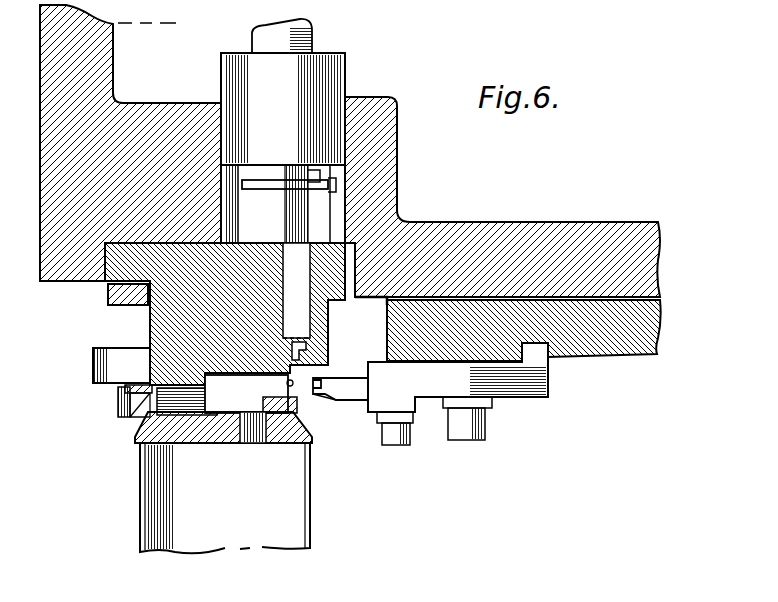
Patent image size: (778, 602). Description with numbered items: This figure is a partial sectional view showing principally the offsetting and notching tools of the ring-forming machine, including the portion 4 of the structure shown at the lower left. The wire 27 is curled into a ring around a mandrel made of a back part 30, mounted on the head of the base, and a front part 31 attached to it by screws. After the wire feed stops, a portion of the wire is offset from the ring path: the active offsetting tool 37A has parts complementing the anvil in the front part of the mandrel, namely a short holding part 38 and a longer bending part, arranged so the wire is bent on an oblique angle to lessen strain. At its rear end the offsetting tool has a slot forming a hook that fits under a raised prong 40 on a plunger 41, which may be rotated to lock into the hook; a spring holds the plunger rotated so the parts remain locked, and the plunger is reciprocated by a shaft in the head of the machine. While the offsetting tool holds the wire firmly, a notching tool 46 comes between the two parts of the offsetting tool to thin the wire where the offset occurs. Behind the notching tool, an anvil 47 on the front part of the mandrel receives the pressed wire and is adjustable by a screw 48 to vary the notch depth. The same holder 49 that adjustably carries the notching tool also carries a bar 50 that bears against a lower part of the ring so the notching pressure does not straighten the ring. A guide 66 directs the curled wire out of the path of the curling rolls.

The cylinder 4 is at (143, 533).
The wire 27 is at (130, 417).
The back part of mandrel 30 is at (225, 314).
The front part of mandrel 31 is at (184, 432).
The offsetting tool 37A is at (298, 221).
The short holding part 38 is at (292, 345).
The raised prong 40 is at (264, 188).
The plunger 41 is at (283, 92).
The notching tool 46 is at (326, 382).
The anvil 47 is at (246, 394).
The screw 48 is at (250, 440).
The holder 49 is at (510, 380).
The bar 50 is at (326, 401).
The guide 66 is at (122, 392).